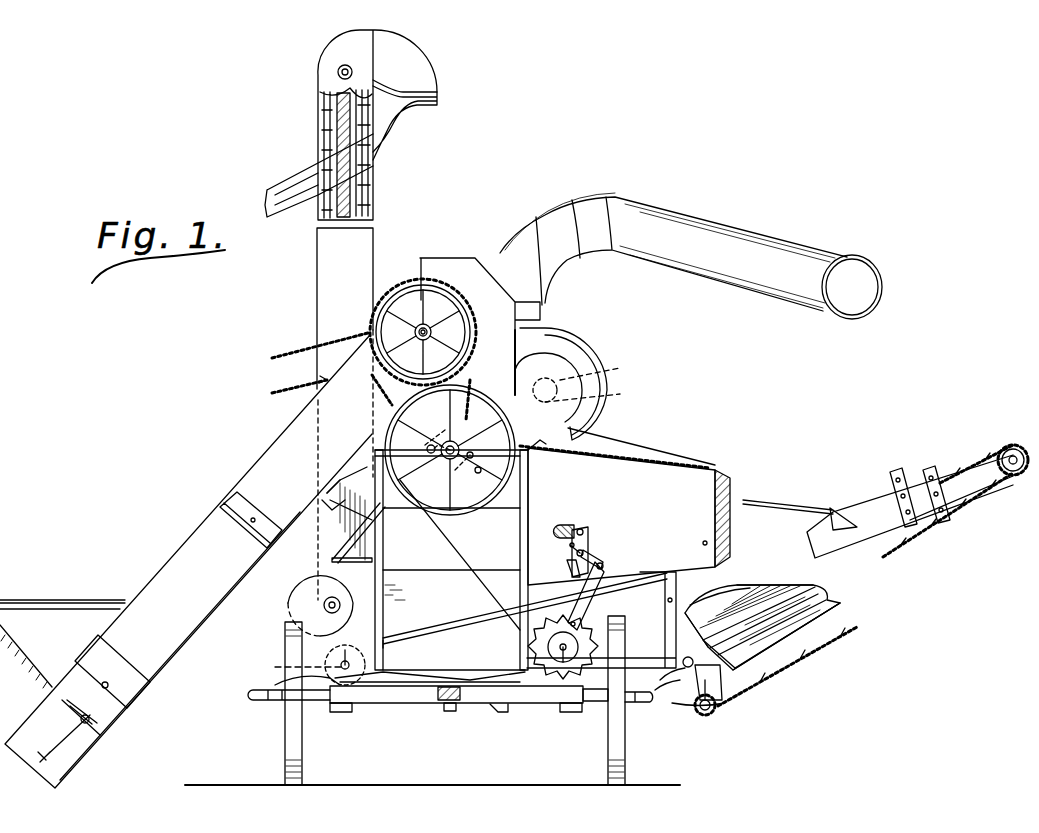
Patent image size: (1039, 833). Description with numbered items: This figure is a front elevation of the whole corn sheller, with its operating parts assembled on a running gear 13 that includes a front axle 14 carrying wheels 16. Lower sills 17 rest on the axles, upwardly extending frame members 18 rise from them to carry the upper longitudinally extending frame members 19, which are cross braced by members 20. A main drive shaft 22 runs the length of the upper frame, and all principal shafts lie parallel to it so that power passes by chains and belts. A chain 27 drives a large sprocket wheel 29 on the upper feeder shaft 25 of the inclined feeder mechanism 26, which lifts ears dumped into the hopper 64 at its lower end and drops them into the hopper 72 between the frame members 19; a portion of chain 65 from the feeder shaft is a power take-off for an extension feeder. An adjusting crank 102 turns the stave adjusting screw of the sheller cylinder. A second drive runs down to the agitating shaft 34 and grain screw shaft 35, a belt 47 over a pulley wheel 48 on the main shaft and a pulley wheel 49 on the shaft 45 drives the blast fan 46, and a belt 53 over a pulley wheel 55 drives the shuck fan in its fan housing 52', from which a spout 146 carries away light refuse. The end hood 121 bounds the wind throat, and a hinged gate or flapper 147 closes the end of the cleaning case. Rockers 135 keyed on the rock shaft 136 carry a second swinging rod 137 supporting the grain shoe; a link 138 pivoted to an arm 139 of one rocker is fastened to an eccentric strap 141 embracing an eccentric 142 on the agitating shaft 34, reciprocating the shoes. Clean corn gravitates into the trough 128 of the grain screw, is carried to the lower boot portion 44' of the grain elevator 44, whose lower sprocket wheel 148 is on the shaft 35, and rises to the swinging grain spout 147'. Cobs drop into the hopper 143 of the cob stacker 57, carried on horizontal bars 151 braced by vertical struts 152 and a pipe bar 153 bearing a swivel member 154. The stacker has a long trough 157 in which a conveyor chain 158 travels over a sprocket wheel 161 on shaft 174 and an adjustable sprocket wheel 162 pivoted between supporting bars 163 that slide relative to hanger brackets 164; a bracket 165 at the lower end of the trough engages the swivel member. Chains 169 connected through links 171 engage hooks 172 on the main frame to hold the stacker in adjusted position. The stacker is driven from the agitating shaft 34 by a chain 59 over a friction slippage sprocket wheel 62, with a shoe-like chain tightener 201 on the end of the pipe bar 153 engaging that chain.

The running gear 13 is at (262, 722).
The front axle 14 is at (400, 704).
The wheels 16 is at (284, 762).
The lower sills 17 is at (384, 660).
The upwardly extending frame members 18 is at (386, 635).
The longitudinally extending frame members 19 is at (390, 440).
The cross brace members 20 is at (530, 500).
The main drive shaft 22 is at (378, 440).
The upper feeder shaft 25 is at (426, 325).
The feeder mechanism 26 is at (250, 453).
The chain 27 is at (470, 360).
The large sprocket wheel 29 is at (400, 287).
The agitating shaft 34 is at (560, 675).
The grain screw shaft 35 is at (345, 652).
The grain elevator 44 is at (358, 209).
The lower boot portion 44' is at (285, 684).
The blast fan shaft 45 is at (325, 590).
The blast fan 46 is at (300, 600).
The belt 47 is at (355, 523).
The pulley wheel 48 is at (458, 440).
The pulley wheel 49 is at (344, 591).
The fan housing 52' is at (583, 387).
The belt 53 is at (588, 393).
The pulley wheel 55 is at (590, 356).
The cob stacker 57 is at (814, 559).
The chain 59 is at (700, 700).
The sprocket wheel 62 is at (668, 690).
The hopper 64 is at (40, 618).
The chain 65 is at (294, 360).
The hopper 72 is at (470, 268).
The adjusting crank 102 is at (330, 497).
The end hood 121 is at (645, 447).
The trough 128 is at (352, 714).
The rockers 135 is at (590, 535).
The rock shaft 136 is at (590, 538).
The second swinging rod 137 is at (568, 572).
The link 138 is at (598, 598).
The arm 139 is at (606, 565).
The eccentric strap 141 is at (500, 708).
The eccentric 142 is at (452, 712).
The hopper 143 is at (745, 585).
The spout 146 is at (768, 250).
The gate or flapper 147 is at (740, 501).
The grain spout 147' is at (341, 148).
The lower sprocket wheel 148 is at (289, 667).
The horizontal bars 151 is at (665, 656).
The vertical struts 152 is at (702, 609).
The pipe bar 153 is at (705, 640).
The swivel member 154 is at (556, 553).
The trough 157 is at (830, 600).
The conveyor chain 158 is at (842, 606).
The sprocket wheel 161 is at (740, 696).
The adjustable sprocket wheel 162 is at (1015, 477).
The supporting bars 163 is at (960, 500).
The hanger brackets 164 is at (925, 505).
The bracket 165 is at (790, 672).
The chains 169 is at (675, 460).
The links 171 is at (765, 500).
The hooks 172 is at (530, 452).
The shaft 174 is at (712, 712).
The chain tightener 201 is at (635, 702).